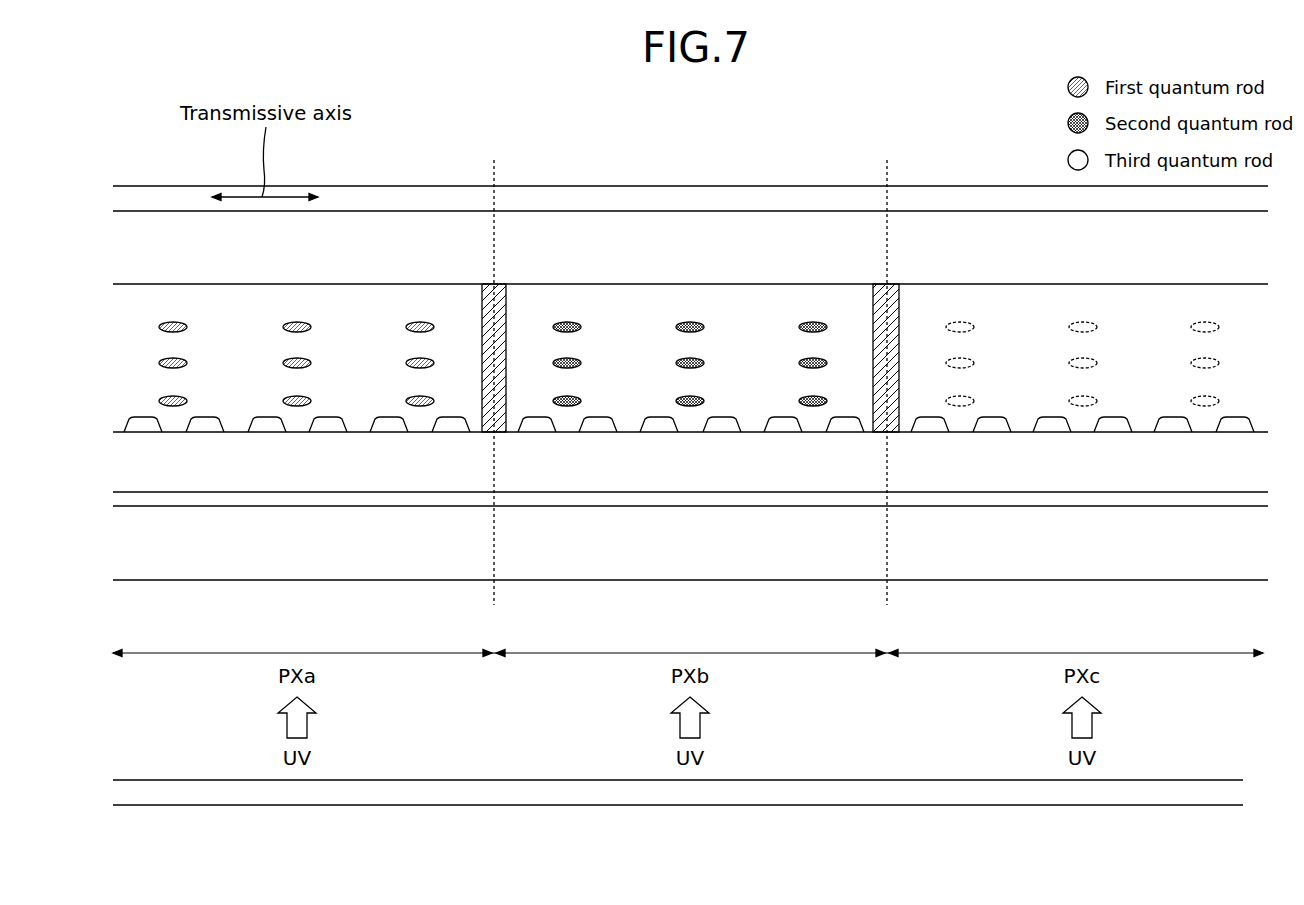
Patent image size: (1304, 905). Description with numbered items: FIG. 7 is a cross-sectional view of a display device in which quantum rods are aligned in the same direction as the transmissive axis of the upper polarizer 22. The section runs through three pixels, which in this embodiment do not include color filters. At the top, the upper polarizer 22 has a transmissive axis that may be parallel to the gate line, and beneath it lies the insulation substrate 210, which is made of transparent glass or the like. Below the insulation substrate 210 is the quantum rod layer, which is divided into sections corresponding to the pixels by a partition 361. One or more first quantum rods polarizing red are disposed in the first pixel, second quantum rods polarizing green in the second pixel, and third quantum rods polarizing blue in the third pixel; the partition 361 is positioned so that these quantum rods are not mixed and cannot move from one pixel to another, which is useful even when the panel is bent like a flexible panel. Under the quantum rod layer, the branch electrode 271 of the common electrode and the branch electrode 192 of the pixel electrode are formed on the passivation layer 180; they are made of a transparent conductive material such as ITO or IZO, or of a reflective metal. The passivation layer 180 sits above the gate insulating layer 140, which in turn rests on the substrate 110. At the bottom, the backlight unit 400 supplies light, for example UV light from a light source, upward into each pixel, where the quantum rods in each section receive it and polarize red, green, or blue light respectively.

The upper polarizer 22 is at (158, 201).
The insulation substrate 210 is at (768, 238).
The partition 361 is at (508, 309).
The branch electrode of the common electrode 271 is at (208, 418).
The branch electrode of the pixel electrode 192 is at (139, 433).
The passivation layer 180 is at (991, 465).
The gate insulating layer 140 is at (1093, 498).
The substrate 110 is at (1175, 553).
The backlight unit 400 is at (1232, 792).